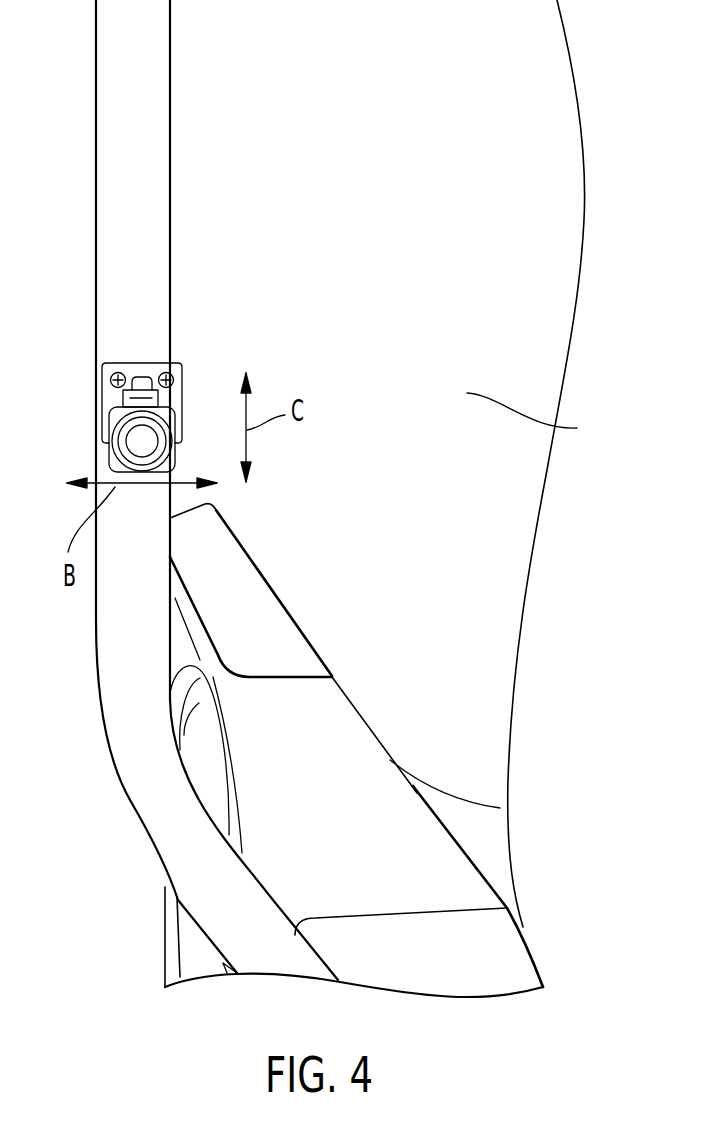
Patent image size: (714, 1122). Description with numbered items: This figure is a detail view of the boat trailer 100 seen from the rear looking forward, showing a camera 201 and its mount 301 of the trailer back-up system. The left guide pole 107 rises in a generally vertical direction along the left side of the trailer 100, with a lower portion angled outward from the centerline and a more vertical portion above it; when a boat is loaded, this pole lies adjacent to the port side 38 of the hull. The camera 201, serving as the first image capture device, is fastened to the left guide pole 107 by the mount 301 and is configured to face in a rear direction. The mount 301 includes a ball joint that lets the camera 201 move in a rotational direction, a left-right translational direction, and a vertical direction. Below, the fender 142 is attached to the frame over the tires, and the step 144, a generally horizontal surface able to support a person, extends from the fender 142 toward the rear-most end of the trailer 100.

The port side 38 is at (535, 463).
The trailer 100 is at (318, 765).
The left guide pole 107 is at (108, 205).
The fender 142 is at (256, 595).
The step 144 is at (412, 928).
The camera 201 is at (113, 467).
The mount 301 is at (112, 393).